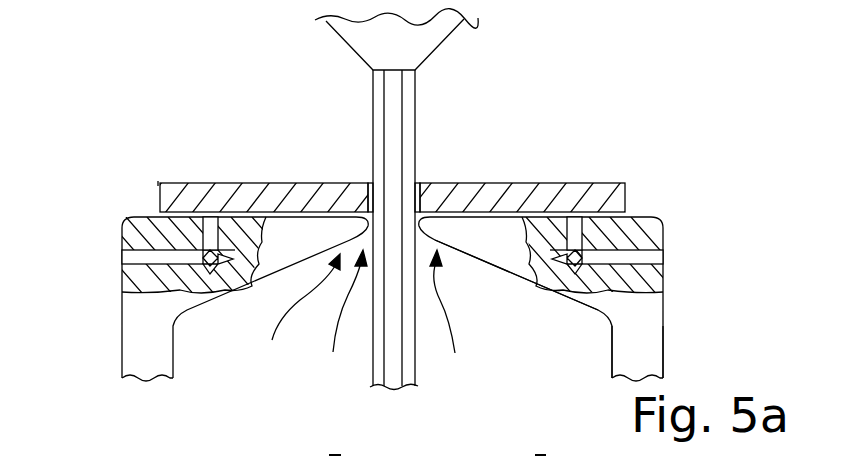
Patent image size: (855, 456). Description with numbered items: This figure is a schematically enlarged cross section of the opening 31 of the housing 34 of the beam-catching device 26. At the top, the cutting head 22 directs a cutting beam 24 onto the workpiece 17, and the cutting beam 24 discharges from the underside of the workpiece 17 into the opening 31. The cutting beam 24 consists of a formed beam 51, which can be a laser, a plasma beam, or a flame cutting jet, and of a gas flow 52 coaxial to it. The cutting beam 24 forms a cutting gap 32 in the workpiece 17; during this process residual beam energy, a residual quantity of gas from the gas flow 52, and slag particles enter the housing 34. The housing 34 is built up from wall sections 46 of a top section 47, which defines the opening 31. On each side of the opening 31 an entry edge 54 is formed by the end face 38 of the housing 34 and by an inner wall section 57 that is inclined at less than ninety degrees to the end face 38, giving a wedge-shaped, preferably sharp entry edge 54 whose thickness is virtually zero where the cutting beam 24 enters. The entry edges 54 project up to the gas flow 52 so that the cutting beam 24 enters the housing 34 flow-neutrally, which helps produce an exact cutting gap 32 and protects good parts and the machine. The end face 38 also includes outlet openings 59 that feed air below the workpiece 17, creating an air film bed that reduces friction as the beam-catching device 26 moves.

The cutting head 22 is at (443, 42).
The cutting beam 24 is at (420, 94).
The formed beam 51 is at (412, 130).
The gas flow 52 is at (398, 155).
The workpiece 17 is at (238, 196).
The end face 38 is at (632, 213).
The cutting gap 32 is at (369, 184).
The outlet openings 59 is at (205, 218).
The beam-catching device 26 is at (112, 333).
The housing 34 is at (674, 319).
The wall sections 46 is at (608, 346).
The top section 47 is at (648, 346).
The inner wall section 57 is at (474, 259).
The entry edges 54 is at (362, 316).
The opening 31 is at (342, 317).